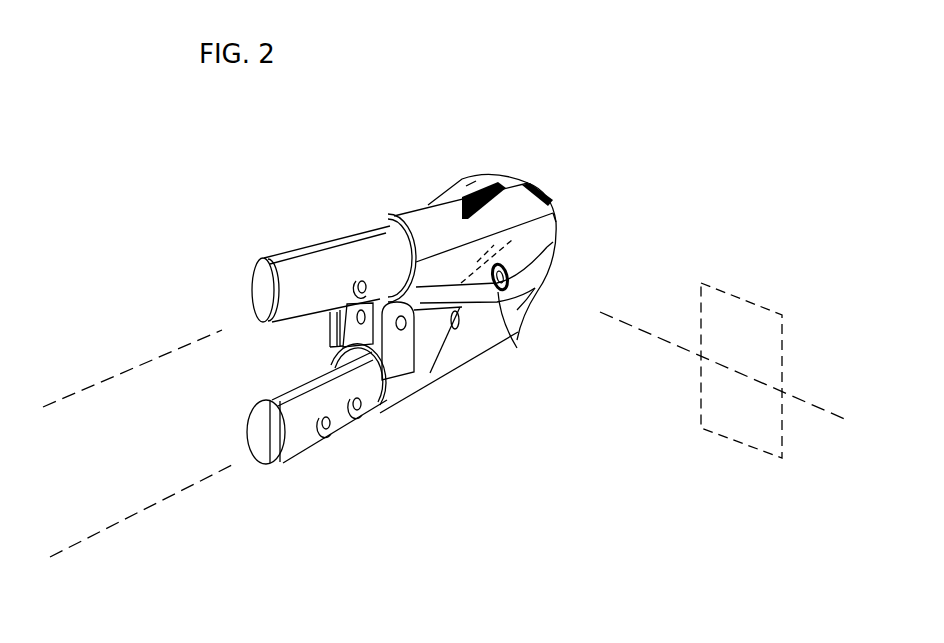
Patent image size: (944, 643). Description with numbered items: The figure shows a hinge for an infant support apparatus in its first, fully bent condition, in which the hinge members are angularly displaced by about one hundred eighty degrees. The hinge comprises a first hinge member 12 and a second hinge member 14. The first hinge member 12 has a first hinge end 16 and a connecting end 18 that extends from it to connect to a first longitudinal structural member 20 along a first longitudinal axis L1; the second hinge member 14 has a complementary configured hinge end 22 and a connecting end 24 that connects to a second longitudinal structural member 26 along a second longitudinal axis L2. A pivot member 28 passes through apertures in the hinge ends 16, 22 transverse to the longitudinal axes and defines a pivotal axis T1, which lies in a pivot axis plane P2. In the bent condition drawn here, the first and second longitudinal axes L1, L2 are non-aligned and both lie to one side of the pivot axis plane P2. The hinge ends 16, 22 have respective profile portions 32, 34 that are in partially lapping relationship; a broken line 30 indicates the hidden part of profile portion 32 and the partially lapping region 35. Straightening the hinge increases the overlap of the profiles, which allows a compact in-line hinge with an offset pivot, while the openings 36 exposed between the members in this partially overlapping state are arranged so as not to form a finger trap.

The first hinge member 12 is at (582, 390).
The second hinge member 14 is at (390, 84).
The first hinge end 16 is at (540, 296).
The connecting end 18 is at (438, 382).
The first longitudinal structural member 20 is at (311, 433).
The hinge end 22 is at (536, 219).
The connecting end 24 is at (388, 220).
The second longitudinal structural member 26 is at (293, 273).
The pivot member 28 is at (520, 307).
The broken line 30 is at (550, 200).
The profile portion 32 is at (540, 277).
The profile portion 34 is at (547, 213).
The partially lapping region 35 is at (517, 256).
The openings 36 is at (473, 175).
The first longitudinal axis L1 is at (153, 507).
The second longitudinal axis L2 is at (117, 376).
The pivot axis plane P2 is at (783, 323).
The pivotal axis T1 is at (833, 408).